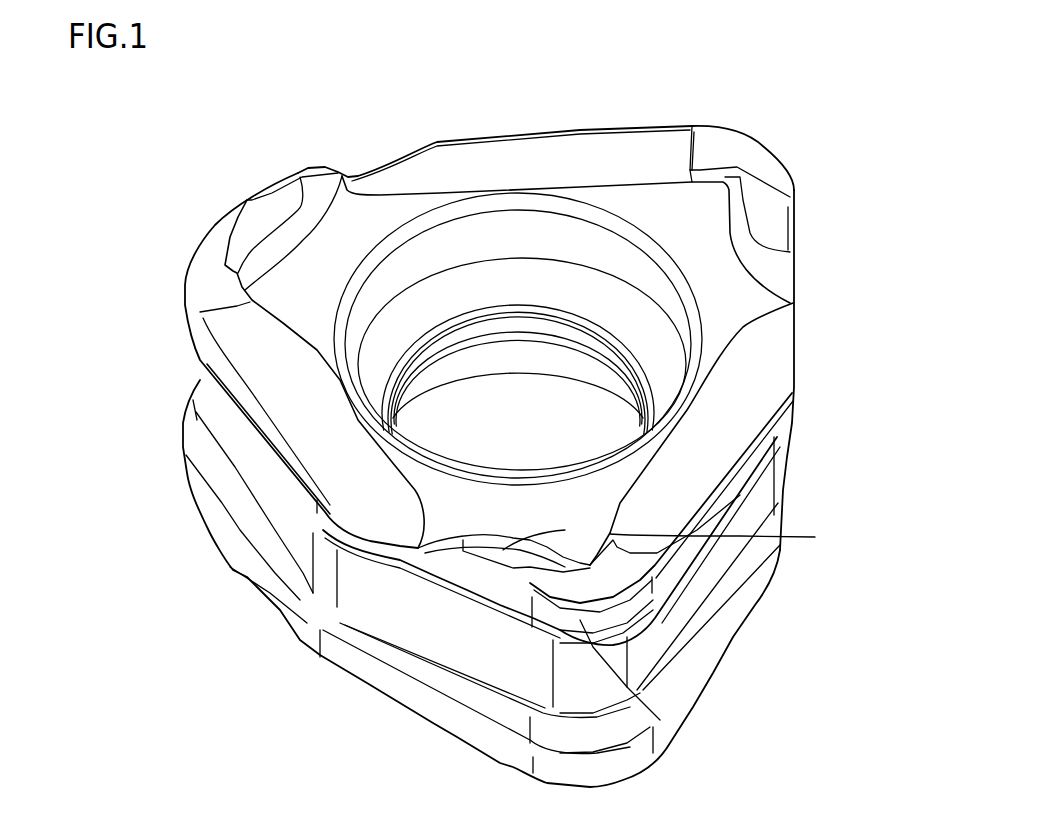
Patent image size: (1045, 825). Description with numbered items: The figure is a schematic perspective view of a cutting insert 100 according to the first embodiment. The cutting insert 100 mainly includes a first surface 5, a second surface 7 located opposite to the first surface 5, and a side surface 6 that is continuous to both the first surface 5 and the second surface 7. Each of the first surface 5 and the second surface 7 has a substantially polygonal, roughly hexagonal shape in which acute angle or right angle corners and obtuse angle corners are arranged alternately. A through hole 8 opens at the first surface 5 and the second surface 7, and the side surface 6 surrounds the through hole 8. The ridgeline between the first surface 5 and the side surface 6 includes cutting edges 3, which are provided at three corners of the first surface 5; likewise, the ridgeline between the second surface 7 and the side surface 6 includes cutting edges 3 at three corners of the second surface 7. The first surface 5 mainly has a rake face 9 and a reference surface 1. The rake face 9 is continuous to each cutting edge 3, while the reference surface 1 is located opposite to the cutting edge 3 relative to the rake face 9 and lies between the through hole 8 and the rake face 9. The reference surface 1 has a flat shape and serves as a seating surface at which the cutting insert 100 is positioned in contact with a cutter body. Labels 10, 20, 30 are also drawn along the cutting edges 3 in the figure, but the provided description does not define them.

The cutting insert 100 is at (847, 86).
The reference surface 1 is at (573, 513).
The cutting edge 3 is at (183, 267).
The first surface 5 is at (882, 497).
The side surface 6 is at (623, 673).
The second surface 7 is at (453, 736).
The through hole 8 is at (510, 237).
The rake face 9 is at (765, 72).
The corner cutting edge 10 is at (765, 220).
The main cutting edge 20 is at (653, 153).
The minor cutting edge 30 is at (722, 150).